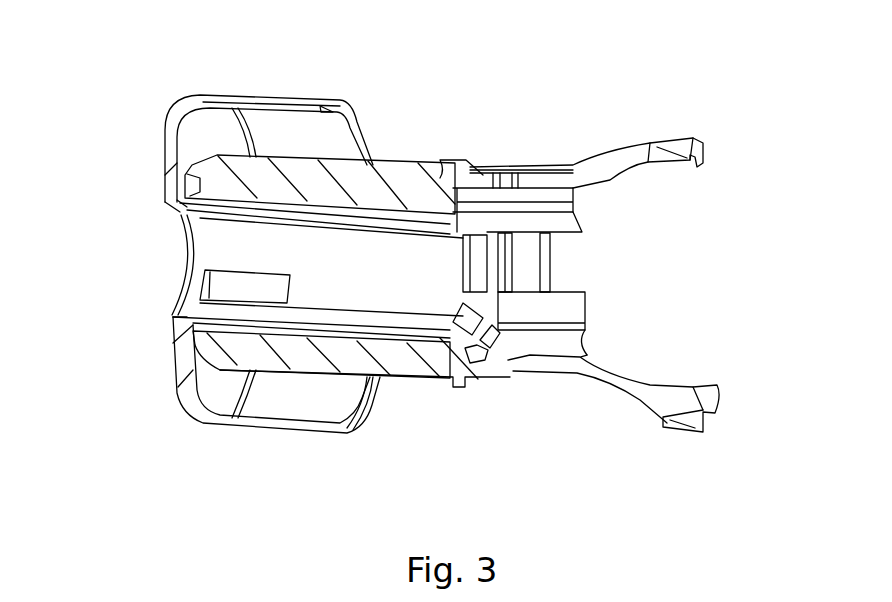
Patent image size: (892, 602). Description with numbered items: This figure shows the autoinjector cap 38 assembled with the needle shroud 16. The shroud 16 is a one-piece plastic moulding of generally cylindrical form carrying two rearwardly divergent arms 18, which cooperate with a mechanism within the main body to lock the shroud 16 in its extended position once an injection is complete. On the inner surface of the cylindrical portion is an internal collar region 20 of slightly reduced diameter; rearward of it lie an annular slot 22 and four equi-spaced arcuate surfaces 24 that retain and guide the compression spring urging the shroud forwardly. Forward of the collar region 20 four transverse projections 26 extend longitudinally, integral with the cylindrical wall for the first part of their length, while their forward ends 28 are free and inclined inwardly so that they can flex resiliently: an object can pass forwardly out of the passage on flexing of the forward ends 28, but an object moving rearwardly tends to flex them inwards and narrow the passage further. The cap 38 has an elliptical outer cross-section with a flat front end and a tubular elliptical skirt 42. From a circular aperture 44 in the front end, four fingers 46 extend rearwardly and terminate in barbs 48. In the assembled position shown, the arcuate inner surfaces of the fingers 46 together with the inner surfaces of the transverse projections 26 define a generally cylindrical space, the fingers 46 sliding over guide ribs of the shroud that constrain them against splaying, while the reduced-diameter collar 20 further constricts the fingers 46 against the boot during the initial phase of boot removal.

The shroud 16 is at (437, 393).
The rearwardly divergent arms 18 is at (657, 178).
The internal collar region 20 is at (397, 345).
The annular slot 22 is at (480, 355).
The arcuate surfaces 24 is at (567, 310).
The transverse projections 26 is at (228, 286).
The forward ends 28 is at (268, 293).
The cap 38 is at (232, 413).
The tubular elliptical skirt 42 is at (297, 110).
The circular aperture 44 is at (165, 295).
The fingers 46 is at (405, 218).
The barbs 48 is at (477, 312).